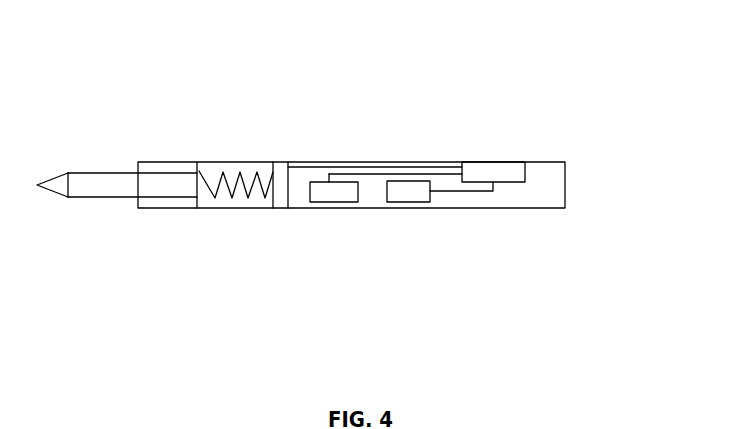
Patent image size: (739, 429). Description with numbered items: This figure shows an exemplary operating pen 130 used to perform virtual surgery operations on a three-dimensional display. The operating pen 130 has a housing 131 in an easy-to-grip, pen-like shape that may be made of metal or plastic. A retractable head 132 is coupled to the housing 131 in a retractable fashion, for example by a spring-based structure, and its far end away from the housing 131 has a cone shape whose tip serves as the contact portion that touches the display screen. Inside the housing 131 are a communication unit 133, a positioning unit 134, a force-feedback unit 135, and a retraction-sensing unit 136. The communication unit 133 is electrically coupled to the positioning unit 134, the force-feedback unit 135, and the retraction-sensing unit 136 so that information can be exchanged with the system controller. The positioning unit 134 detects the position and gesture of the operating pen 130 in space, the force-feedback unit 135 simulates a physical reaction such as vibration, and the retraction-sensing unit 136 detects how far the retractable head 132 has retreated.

The operating pen 130 is at (118, 48).
The housing 131 is at (402, 165).
The retractable head 132 is at (172, 172).
The communication unit 133 is at (495, 168).
The positioning unit 134 is at (334, 196).
The force-feedback unit 135 is at (281, 196).
The retraction-sensing unit 136 is at (408, 196).